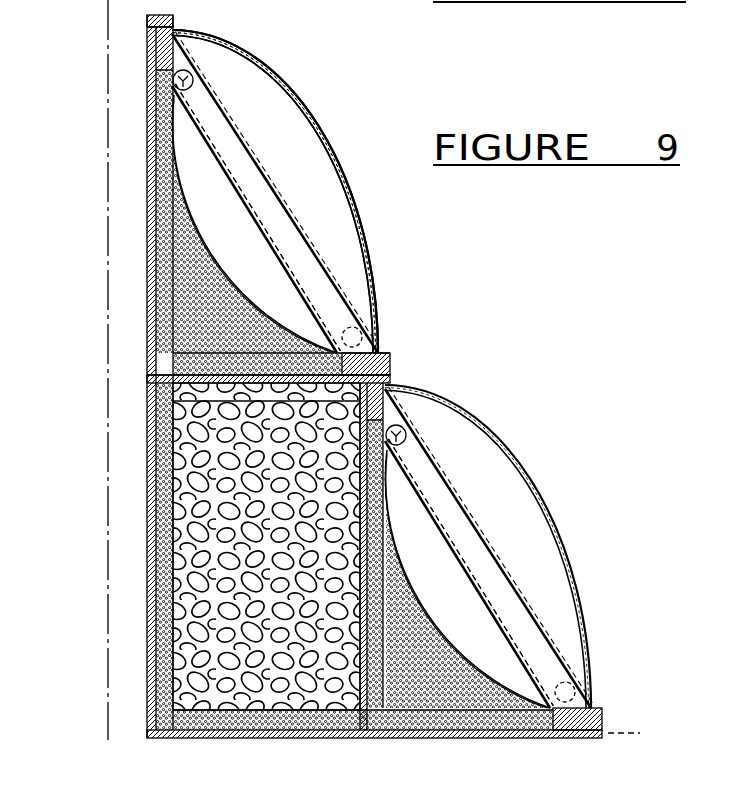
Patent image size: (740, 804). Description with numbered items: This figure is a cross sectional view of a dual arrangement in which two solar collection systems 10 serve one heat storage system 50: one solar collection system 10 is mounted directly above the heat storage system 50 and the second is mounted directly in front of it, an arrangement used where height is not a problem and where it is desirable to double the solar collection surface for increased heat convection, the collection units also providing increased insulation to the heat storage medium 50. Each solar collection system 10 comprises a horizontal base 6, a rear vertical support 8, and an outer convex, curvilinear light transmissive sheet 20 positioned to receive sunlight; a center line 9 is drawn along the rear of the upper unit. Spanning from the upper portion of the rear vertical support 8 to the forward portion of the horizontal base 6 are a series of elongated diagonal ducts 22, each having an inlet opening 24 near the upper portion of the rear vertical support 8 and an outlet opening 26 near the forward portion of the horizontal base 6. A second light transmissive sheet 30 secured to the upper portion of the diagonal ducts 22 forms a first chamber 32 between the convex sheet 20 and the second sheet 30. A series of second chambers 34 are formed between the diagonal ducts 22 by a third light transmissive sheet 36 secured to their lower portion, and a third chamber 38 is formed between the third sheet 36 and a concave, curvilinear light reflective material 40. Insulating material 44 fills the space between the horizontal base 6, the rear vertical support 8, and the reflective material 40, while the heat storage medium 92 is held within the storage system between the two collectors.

The horizontal base 6 is at (508, 733).
The rear vertical support 8 is at (148, 163).
The center line 9 is at (108, 24).
The solar collection system 10 is at (322, 120).
The convex, curvilinear light transmissive sheet 20 is at (289, 100).
The elongated diagonal ducts 22 is at (325, 305).
The inlet opening 24 is at (191, 73).
The outlet opening 26 is at (364, 331).
The second light transmissive sheet 30 is at (272, 183).
The first chamber 32 is at (244, 90).
The second chambers 34 is at (326, 268).
The third light transmissive sheet 36 is at (264, 264).
The third chamber 38 is at (317, 276).
The concave, curvilinear light reflective material 40 is at (148, 265).
The insulating material 44 is at (150, 332).
The heat storage medium 50 is at (146, 524).
The heat storage medium 92 is at (220, 458).